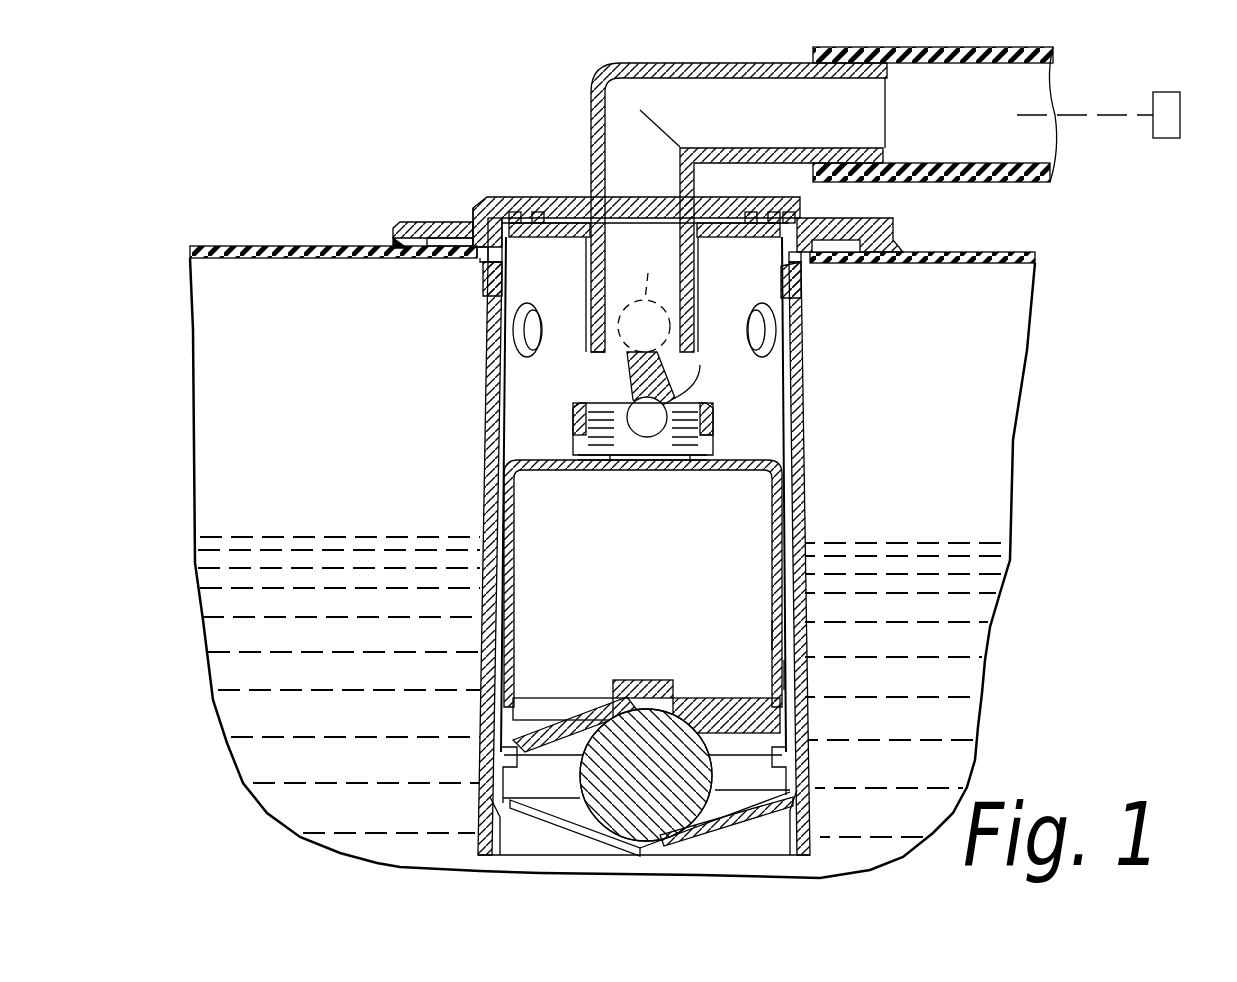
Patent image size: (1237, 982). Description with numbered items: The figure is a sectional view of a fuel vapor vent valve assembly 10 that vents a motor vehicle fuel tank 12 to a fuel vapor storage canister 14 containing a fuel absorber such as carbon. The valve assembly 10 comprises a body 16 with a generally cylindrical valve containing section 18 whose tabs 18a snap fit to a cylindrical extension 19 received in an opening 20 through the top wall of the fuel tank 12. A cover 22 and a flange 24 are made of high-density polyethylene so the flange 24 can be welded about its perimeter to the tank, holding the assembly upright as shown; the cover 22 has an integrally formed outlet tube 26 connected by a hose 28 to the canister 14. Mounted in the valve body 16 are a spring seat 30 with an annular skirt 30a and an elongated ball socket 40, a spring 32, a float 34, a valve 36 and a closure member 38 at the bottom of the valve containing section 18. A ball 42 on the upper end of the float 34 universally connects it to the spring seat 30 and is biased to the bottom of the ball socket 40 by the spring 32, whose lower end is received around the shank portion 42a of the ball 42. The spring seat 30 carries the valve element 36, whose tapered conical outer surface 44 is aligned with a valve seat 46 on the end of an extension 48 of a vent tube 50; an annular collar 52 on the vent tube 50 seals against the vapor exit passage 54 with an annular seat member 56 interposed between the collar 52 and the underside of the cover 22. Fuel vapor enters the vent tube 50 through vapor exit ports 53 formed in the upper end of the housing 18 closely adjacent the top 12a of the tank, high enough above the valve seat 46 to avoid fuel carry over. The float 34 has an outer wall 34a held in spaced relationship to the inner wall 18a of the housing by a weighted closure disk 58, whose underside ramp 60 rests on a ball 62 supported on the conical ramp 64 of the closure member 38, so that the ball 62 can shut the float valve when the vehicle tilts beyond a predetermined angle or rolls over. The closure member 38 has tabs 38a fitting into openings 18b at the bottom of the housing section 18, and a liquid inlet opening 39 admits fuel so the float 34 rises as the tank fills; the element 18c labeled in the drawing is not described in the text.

The valve assembly 10 is at (535, 162).
The fuel tank 12 is at (290, 244).
The top of the fuel tank 12a is at (477, 257).
The fuel vapor storage canister 14 is at (1168, 132).
The body 16 is at (487, 350).
The valve containing section 18 is at (490, 448).
The tabs 18a is at (490, 270).
The openings 18b is at (478, 755).
The liner wall 18c is at (800, 672).
The cylindrical extension 19 is at (482, 265).
The opening 20 is at (808, 262).
The cover 22 is at (548, 196).
The flange 24 is at (398, 222).
The outlet tube 26 is at (757, 42).
The hose 28 is at (1018, 178).
The spring seat 30 is at (717, 420).
The annular skirt 30a is at (720, 436).
The spring 32 is at (580, 423).
The float 34 is at (787, 510).
The outer wall 34a is at (787, 632).
The valve 36 is at (700, 376).
The closure member 38 is at (808, 850).
The tabs 38a is at (485, 758).
The liquid inlet opening 39 is at (567, 828).
The elongated ball socket 40 is at (692, 395).
The ball 42 is at (650, 455).
The shank portion 42a is at (632, 455).
The tapered conical outer surface 44 is at (672, 378).
The valve seat 46 is at (590, 355).
The extension 48 is at (697, 265).
The vent tube 50 is at (592, 282).
The annular collar 52 is at (803, 228).
The vapor exit ports 53 is at (520, 330).
The vapor exit passage 54 is at (665, 196).
The annular seat member 56 is at (505, 215).
The weighted closure disk 58 is at (795, 738).
The conical surface or ramp 60 is at (808, 822).
The ball 62 is at (660, 830).
The conical inner surface or ramp 64 is at (722, 838).